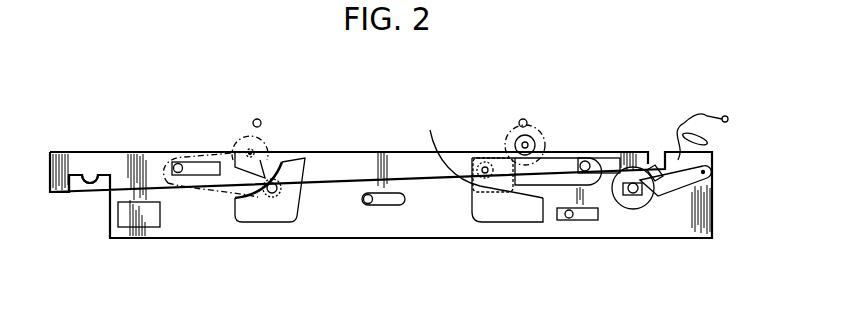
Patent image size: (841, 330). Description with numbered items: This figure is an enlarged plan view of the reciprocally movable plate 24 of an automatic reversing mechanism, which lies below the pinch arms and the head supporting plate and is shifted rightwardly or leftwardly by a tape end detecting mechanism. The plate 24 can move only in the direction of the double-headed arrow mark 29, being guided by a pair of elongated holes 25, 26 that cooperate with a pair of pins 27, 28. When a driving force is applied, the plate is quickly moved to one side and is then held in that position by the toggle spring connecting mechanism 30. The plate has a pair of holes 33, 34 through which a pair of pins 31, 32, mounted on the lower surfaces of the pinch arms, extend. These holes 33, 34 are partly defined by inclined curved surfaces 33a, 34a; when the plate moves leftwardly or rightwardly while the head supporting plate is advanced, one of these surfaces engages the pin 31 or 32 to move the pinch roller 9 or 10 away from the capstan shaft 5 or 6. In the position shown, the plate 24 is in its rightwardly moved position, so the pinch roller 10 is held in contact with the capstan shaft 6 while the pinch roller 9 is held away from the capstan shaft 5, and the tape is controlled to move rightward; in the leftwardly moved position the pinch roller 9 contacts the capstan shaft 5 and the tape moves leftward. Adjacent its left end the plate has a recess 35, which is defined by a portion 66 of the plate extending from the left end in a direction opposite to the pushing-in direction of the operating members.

The reciprocally movable plate 24 is at (698, 224).
The portion of the reciprocally movable plate 66 is at (66, 194).
The recess 35 is at (97, 172).
The pinch roller 9 is at (243, 136).
The capstan shaft 5 is at (261, 122).
The hole 33 is at (300, 184).
The inclined curved surface 33a is at (308, 156).
The pin 31 is at (268, 197).
The elongated hole 25 is at (400, 206).
The pin 27 is at (365, 206).
The double-headed arrow mark 29 is at (428, 251).
The hole 34 is at (513, 224).
The inclined curved surface 34a is at (478, 151).
The pin 32 is at (484, 163).
The capstan shaft 6 is at (525, 119).
The pinch roller 10 is at (528, 125).
The pin 28 is at (568, 221).
The elongated hole 26 is at (590, 221).
The toggle spring connecting mechanism 30 is at (683, 128).